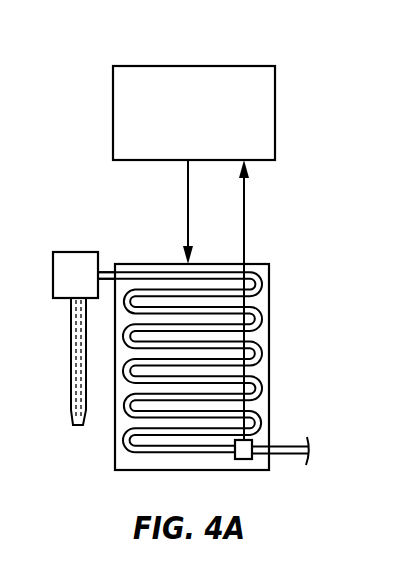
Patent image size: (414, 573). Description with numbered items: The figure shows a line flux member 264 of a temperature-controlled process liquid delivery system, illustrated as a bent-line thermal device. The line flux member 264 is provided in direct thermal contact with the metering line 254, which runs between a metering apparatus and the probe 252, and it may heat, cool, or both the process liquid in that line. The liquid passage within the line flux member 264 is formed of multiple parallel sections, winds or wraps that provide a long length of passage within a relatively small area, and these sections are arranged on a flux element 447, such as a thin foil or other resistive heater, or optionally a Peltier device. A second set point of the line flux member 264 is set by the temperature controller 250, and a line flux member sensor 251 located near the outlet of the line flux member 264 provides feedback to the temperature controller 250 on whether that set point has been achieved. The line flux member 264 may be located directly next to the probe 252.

The temperature controller 250 is at (195, 66).
The line flux member 264 is at (278, 255).
The flux element 447 is at (262, 332).
The metering line 254 is at (103, 264).
The line flux member sensor 251 is at (244, 460).
The probe 252 is at (67, 343).